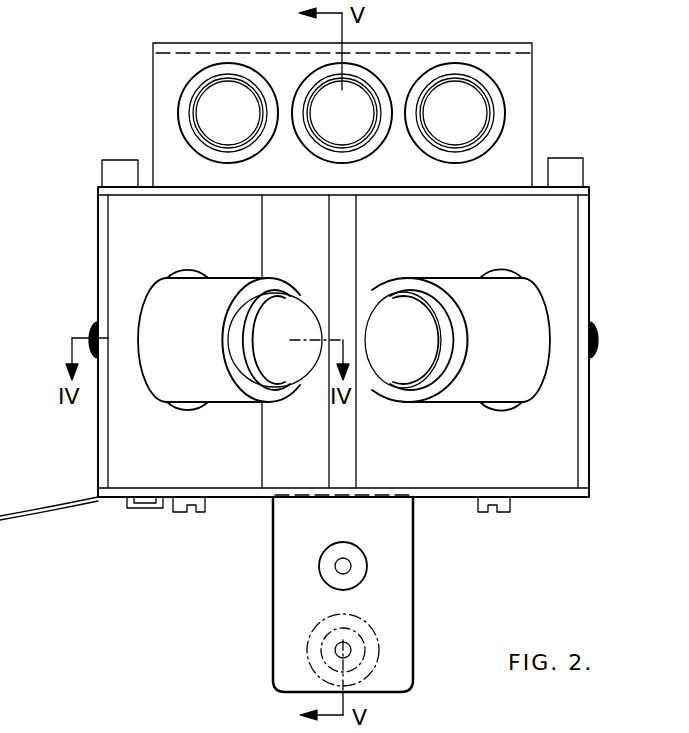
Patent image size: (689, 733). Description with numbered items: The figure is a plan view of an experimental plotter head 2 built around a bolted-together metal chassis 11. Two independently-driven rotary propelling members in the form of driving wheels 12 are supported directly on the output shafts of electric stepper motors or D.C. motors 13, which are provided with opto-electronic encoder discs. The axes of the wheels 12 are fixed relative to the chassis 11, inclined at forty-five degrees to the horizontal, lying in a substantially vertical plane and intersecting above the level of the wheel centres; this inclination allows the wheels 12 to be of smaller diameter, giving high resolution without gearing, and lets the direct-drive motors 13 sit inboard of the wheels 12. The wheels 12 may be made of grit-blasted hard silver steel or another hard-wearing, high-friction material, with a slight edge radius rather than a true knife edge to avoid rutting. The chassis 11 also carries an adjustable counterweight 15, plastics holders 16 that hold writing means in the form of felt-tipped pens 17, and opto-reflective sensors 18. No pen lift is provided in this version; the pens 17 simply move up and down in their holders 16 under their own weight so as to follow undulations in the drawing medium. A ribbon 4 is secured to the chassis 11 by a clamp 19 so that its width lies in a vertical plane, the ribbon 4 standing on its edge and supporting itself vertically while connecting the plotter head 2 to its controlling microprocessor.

The plotter head 2 is at (230, 510).
The ribbon 4 is at (42, 510).
The chassis 11 is at (98, 258).
The driving wheels 12 is at (95, 322).
The motors 13 is at (305, 325).
The counterweight 15 is at (360, 650).
The holders 16 is at (256, 153).
The felt-tipped pens 17 is at (323, 104).
The opto-reflective sensors 18 is at (117, 168).
The clamp 19 is at (143, 508).